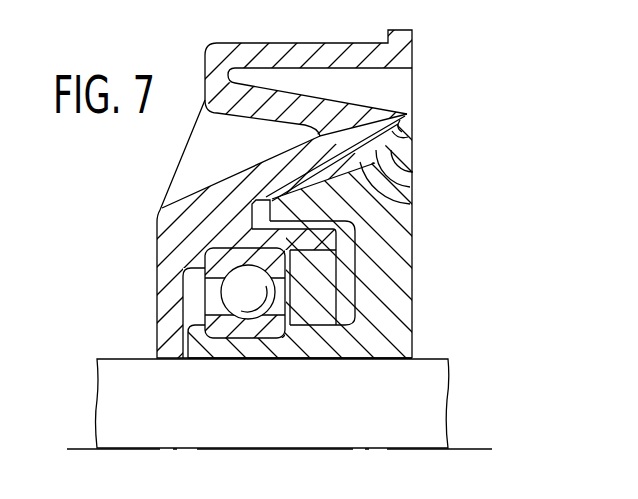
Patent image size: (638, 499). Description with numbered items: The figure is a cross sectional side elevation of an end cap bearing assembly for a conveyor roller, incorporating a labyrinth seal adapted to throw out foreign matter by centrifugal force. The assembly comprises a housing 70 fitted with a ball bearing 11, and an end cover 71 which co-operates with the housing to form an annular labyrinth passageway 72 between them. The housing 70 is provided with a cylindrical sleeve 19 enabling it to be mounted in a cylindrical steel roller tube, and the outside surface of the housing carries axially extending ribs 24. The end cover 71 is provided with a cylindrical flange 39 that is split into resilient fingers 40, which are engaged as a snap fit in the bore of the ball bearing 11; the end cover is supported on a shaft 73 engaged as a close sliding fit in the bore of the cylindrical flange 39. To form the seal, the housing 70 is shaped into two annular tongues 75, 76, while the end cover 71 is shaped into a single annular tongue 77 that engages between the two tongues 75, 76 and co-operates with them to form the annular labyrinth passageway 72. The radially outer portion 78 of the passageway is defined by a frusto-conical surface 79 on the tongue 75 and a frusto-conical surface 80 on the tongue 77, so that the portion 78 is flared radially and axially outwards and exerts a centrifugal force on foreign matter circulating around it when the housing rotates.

The ball bearing 11 is at (190, 290).
The cylindrical sleeve 19 is at (329, 58).
The axially extending ribs 24 is at (334, 90).
The cylindrical flange 39 is at (323, 350).
The resilient fingers 40 is at (190, 340).
The housing 70 is at (158, 253).
The end cover 71 is at (413, 300).
The annular labyrinth passageway 72 is at (255, 212).
The shaft 73 is at (432, 401).
The annular tongue 75 is at (411, 126).
The annular tongue 76 is at (327, 240).
The annular tongue 77 is at (272, 197).
The radially outer portion 78 is at (412, 172).
The frusto-conical surface 79 is at (411, 112).
The frusto-conical surface 80 is at (412, 208).